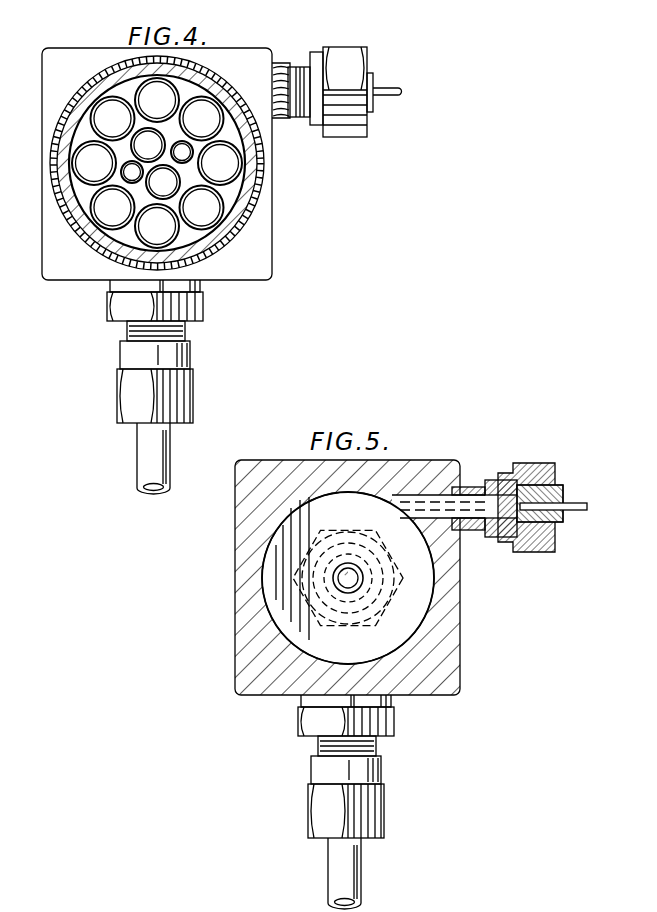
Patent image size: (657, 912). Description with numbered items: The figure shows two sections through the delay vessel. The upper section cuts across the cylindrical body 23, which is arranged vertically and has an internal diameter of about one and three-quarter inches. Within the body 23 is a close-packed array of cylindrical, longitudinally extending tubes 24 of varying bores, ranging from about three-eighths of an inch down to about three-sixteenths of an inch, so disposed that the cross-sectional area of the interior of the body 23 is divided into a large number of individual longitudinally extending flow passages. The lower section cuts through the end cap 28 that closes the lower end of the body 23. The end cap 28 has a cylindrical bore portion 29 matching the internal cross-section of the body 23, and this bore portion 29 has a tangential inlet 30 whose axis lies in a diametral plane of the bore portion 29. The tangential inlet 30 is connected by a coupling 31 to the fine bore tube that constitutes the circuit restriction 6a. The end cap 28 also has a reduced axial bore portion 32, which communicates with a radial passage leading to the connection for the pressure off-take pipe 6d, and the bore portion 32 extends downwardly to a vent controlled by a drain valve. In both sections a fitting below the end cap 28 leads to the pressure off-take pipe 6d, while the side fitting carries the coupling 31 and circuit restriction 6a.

In FIG. 4, the circuit restriction 6a is at (397, 90).
In FIG. 5, the circuit restriction 6a is at (572, 503).
In FIG. 4, the pressure off-take pipe 6d is at (168, 453).
In FIG. 5, the pressure off-take pipe 6d is at (358, 892).
In FIG. 4, the cylindrical body 23 is at (228, 224).
In FIG. 4, the tubes 24 is at (107, 208).
In FIG. 4, the end cap 28 is at (255, 270).
In FIG. 5, the end cap 28 is at (443, 647).
In FIG. 5, the cylindrical bore portion 29 is at (410, 610).
In FIG. 5, the tangential inlet 30 is at (440, 482).
In FIG. 4, the coupling 31 is at (351, 137).
In FIG. 5, the coupling 31 is at (527, 476).
In FIG. 5, the reduced axial bore portion 32 is at (358, 580).